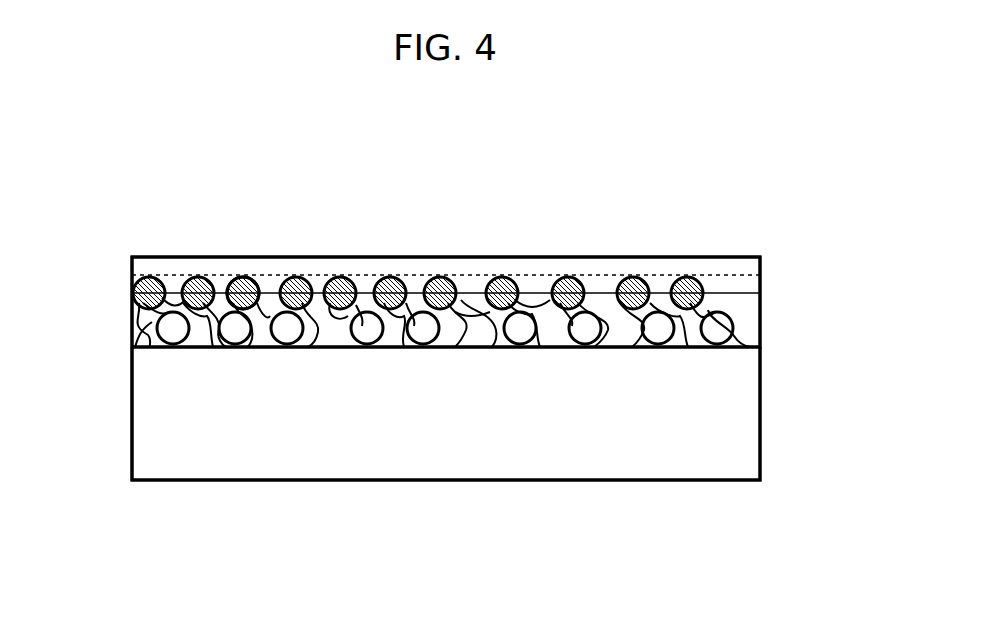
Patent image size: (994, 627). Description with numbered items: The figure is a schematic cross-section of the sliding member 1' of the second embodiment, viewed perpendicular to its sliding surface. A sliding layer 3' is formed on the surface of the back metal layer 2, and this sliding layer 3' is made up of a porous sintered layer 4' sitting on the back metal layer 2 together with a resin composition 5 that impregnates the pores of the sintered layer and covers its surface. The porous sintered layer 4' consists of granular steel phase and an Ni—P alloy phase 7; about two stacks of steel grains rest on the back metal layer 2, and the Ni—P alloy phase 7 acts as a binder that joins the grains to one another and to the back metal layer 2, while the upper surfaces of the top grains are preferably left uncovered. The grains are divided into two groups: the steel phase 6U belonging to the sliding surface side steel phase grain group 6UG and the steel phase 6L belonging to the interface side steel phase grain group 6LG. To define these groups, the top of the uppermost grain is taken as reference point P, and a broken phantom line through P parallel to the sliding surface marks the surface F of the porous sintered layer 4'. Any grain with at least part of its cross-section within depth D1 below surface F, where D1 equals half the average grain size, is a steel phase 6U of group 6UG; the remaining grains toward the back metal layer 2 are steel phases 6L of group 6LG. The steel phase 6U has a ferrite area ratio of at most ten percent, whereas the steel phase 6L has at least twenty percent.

The sliding member 1' is at (477, 284).
The back metal layer 2 is at (427, 481).
The sliding layer 3' is at (446, 246).
The porous sintered layer 4' is at (446, 212).
The resin composition 5 is at (557, 275).
The steel phase on sliding surface side 6U is at (685, 278).
The steel phase on interface side 6L is at (717, 333).
The sliding surface side steel phase grain group 6UG is at (773, 280).
The interface side steel phase grain group 6LG is at (773, 315).
The Ni—P alloy phase 7 is at (162, 318).
The reference point P is at (238, 278).
The surface of the porous sintered layer F is at (313, 278).
The depth D1 is at (122, 277).